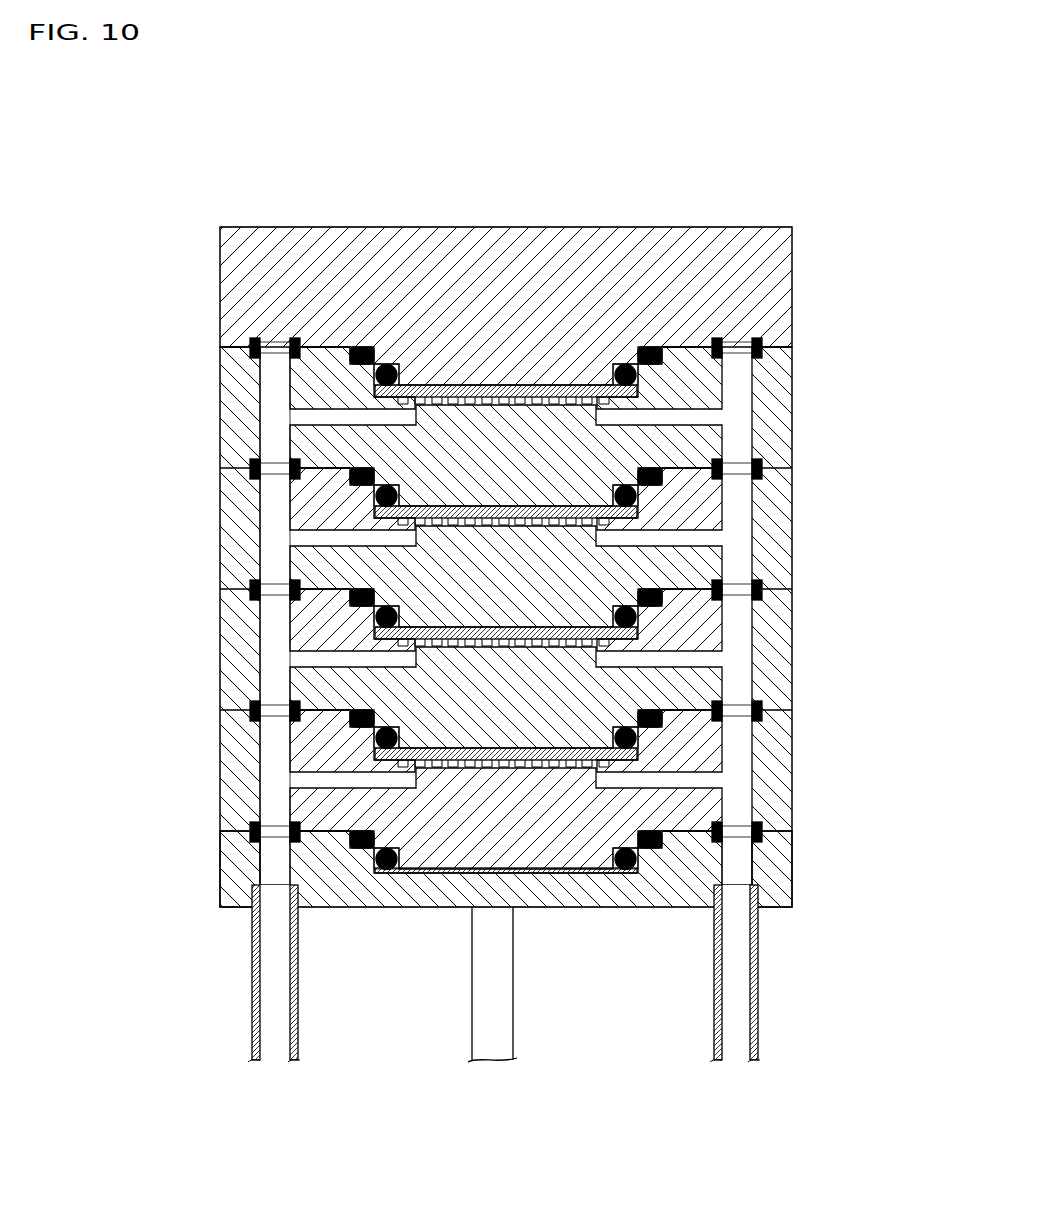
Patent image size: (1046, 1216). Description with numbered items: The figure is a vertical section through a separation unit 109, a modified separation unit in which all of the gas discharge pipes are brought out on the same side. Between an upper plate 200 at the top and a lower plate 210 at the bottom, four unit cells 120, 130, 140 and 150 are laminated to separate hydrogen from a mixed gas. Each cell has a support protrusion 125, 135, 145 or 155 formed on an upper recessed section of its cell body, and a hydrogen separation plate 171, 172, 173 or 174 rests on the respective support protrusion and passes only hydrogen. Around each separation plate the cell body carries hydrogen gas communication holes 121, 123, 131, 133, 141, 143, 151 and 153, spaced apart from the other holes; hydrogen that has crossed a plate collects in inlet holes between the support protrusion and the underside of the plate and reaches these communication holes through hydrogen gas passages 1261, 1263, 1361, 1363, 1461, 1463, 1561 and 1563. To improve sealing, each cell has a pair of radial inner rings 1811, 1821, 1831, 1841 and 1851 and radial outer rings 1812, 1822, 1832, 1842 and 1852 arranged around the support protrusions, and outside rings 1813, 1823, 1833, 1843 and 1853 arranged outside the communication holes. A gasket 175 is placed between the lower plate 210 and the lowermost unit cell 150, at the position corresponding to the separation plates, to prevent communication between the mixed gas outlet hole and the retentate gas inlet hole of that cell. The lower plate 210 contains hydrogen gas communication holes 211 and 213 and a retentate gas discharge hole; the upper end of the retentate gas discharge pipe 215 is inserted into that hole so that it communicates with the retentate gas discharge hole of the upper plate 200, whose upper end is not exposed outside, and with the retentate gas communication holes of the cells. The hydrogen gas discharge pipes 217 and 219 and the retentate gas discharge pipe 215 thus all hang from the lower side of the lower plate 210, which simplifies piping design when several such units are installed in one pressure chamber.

The separation unit 109 is at (698, 127).
The upper plate 200 is at (203, 275).
The unit cell 120 is at (453, 342).
The hydrogen gas communication hole 123 is at (287, 438).
The hydrogen gas passage 1263 is at (277, 417).
The hydrogen gas passage 1261 is at (690, 408).
The hydrogen gas communication hole 121 is at (735, 424).
The hydrogen separation plate 171 is at (493, 384).
The support protrusion 125 is at (480, 407).
The radial inner ring 1811 is at (626, 364).
The radial outer ring 1812 is at (650, 347).
The outside ring 1813 is at (735, 340).
The unit cell 130 is at (455, 523).
The hydrogen gas communication hole 133 is at (287, 562).
The hydrogen gas passage 1363 is at (277, 538).
The hydrogen gas passage 1361 is at (690, 529).
The hydrogen gas communication hole 131 is at (735, 545).
The hydrogen separation plate 172 is at (495, 505).
The support protrusion 135 is at (480, 528).
The radial inner ring 1821 is at (618, 494).
The radial outer ring 1822 is at (642, 480).
The outside ring 1823 is at (757, 470).
The unit cell 140 is at (455, 644).
The hydrogen gas communication hole 143 is at (287, 682).
The hydrogen gas passage 1463 is at (277, 659).
The hydrogen gas passage 1461 is at (690, 650).
The hydrogen gas communication hole 141 is at (735, 666).
The hydrogen separation plate 173 is at (495, 626).
The support protrusion 145 is at (480, 648).
The radial inner ring 1831 is at (618, 615).
The radial outer ring 1832 is at (642, 601).
The outside ring 1833 is at (757, 591).
The unit cell 150 is at (455, 766).
The hydrogen gas communication hole 153 is at (287, 802).
The hydrogen gas passage 1563 is at (277, 780).
The hydrogen gas passage 1561 is at (690, 771).
The hydrogen gas communication hole 151 is at (735, 788).
The hydrogen separation plate 174 is at (495, 747).
The support protrusion 155 is at (480, 770).
The radial inner ring 1841 is at (618, 736).
The radial outer ring 1842 is at (642, 722).
The outside ring 1843 is at (757, 712).
The lower plate 210 is at (455, 926).
The hydrogen gas communication hole 213 is at (265, 880).
The hydrogen gas communication hole 211 is at (745, 880).
The gasket 175 is at (566, 875).
The radial inner ring 1851 is at (617, 852).
The radial outer ring 1852 is at (642, 838).
The outside ring 1853 is at (757, 833).
The hydrogen gas discharge pipe 219 is at (298, 1000).
The retentate gas discharge pipe 215 is at (513, 1010).
The hydrogen gas discharge pipe 217 is at (715, 1000).